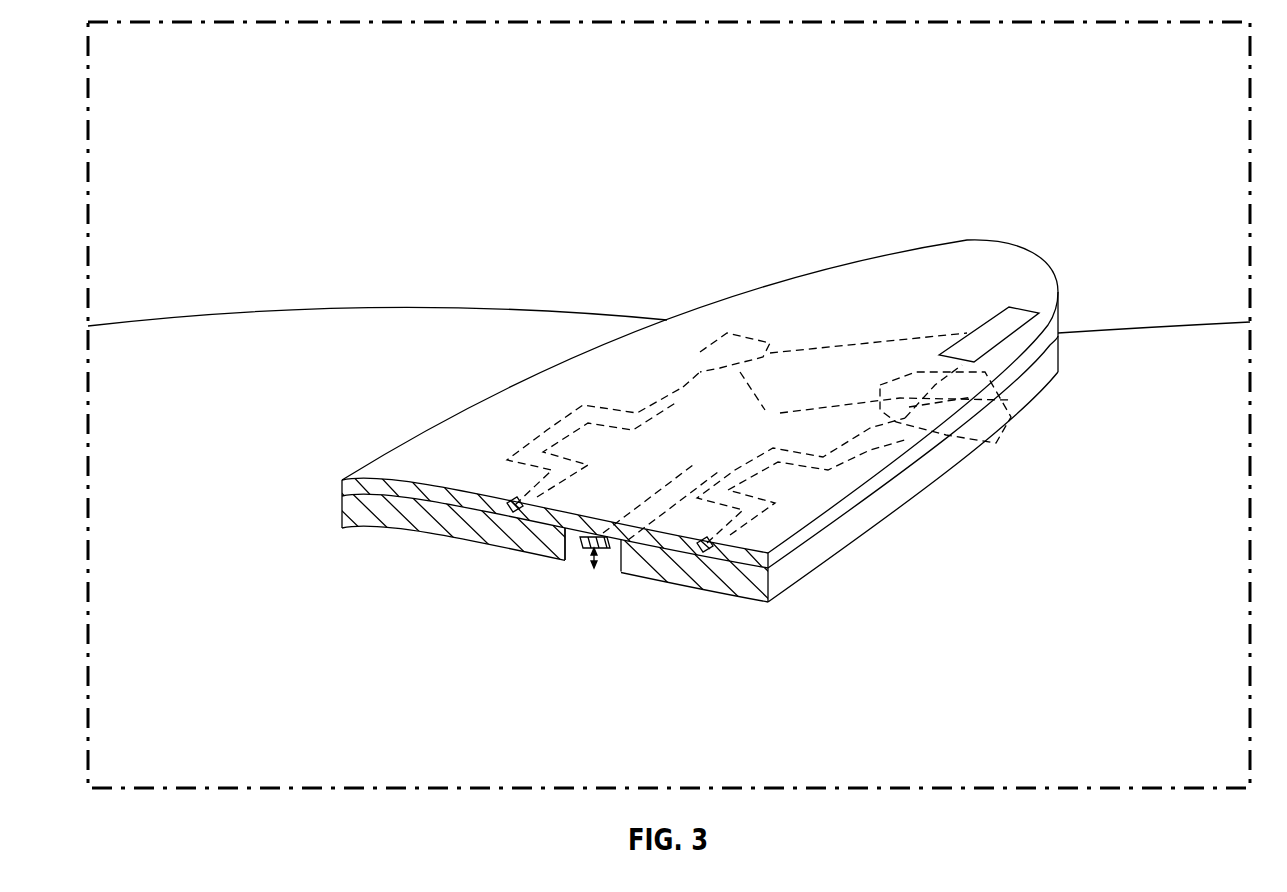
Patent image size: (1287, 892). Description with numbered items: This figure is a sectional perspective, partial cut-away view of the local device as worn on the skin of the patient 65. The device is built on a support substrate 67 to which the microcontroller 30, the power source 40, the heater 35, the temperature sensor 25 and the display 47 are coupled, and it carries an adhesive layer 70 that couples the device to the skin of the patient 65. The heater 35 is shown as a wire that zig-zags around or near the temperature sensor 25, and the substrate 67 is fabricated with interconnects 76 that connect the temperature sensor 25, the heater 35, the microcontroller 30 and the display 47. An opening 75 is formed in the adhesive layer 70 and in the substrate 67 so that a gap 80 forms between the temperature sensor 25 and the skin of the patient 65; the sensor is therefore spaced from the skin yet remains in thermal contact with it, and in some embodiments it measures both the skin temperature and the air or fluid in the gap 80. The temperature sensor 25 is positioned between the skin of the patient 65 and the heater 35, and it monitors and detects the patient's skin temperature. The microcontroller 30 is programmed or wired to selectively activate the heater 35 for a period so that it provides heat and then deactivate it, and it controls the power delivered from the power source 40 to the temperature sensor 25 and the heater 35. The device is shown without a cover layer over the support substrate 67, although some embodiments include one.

The patient 65 is at (307, 307).
The support substrate 67 is at (341, 484).
The adhesive layer 70 is at (341, 520).
The temperature sensor 25 is at (563, 533).
The opening 75 is at (578, 562).
The gap 80 is at (594, 569).
The heater 35 is at (547, 430).
The power source 40 is at (745, 335).
The interconnects 76 is at (683, 387).
The microcontroller 30 is at (1016, 448).
The display 47 is at (1059, 289).